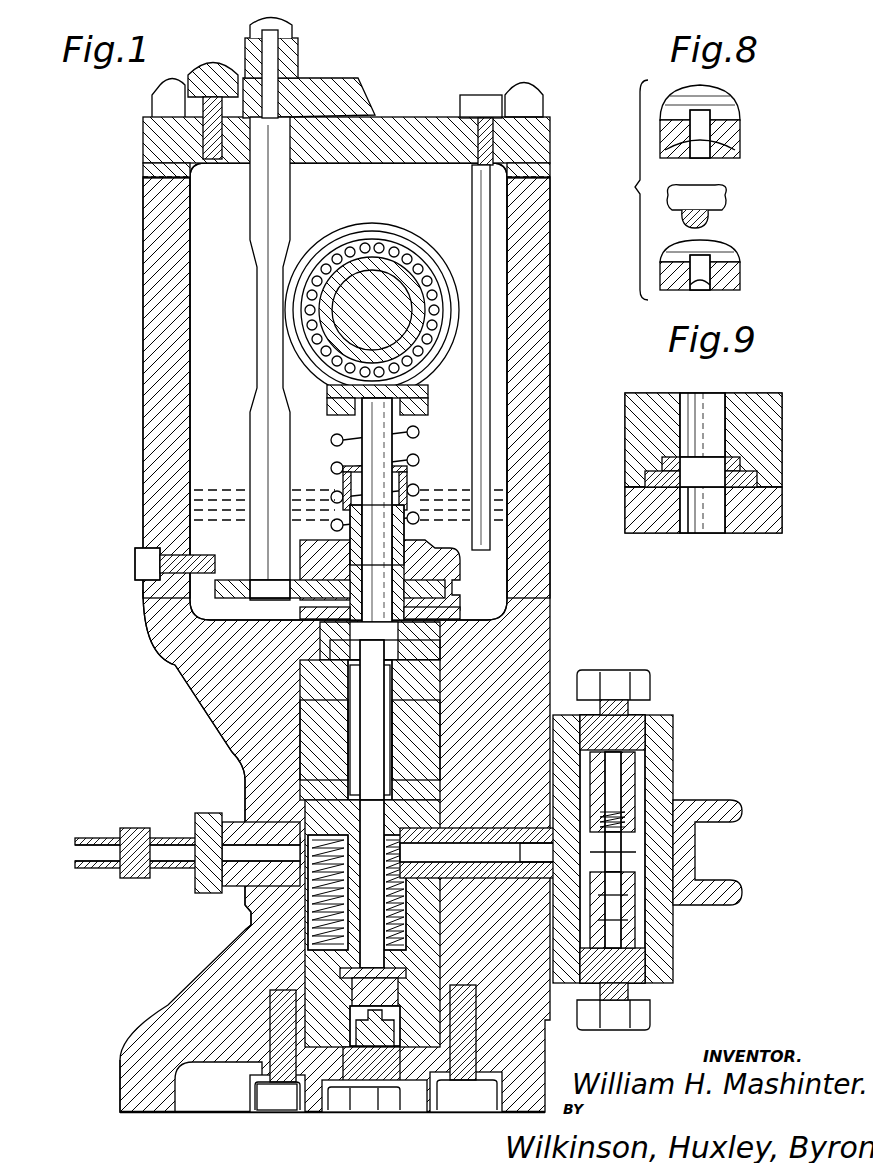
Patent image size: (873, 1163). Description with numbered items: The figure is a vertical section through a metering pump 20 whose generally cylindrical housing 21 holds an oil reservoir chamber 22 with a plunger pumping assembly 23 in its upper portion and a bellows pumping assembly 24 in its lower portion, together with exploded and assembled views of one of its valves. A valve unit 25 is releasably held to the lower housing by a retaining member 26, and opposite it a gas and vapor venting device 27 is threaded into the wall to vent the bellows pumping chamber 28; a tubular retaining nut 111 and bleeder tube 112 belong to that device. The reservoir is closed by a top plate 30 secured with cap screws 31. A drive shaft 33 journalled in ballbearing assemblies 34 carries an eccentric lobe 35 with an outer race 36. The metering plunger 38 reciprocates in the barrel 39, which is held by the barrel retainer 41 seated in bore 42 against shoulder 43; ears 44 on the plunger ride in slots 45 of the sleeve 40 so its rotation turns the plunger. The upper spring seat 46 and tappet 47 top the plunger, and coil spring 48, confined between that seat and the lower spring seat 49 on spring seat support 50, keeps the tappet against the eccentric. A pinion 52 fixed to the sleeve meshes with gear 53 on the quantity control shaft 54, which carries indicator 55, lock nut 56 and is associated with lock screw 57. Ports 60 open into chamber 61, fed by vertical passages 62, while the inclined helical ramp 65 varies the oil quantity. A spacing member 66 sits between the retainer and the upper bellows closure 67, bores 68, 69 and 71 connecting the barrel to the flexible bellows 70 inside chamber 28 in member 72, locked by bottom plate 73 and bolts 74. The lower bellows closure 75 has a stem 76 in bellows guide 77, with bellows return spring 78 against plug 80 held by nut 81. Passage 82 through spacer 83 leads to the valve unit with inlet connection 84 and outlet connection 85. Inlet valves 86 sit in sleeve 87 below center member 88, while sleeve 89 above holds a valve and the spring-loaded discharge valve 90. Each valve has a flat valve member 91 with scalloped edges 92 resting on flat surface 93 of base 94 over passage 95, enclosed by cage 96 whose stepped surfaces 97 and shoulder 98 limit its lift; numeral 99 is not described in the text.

In FIG. 1, the pump 20 is at (141, 244).
In FIG. 1, the housing 21 is at (143, 430).
In FIG. 1, the oil reservoir chamber 22 is at (190, 366).
In FIG. 1, the plunger pumping assembly 23 is at (515, 430).
In FIG. 1, the bellows pumping assembly 24 is at (245, 930).
In FIG. 1, the valve unit 25 is at (682, 730).
In FIG. 1, the retaining member 26 is at (742, 890).
In FIG. 1, the gas and vapor venting device 27 is at (192, 893).
In FIG. 1, the bellows pumping chamber 28 is at (400, 980).
In FIG. 1, the top plate 30 is at (405, 130).
In FIG. 1, the cap screws 31 is at (522, 78).
In FIG. 1, the drive shaft 33 is at (400, 318).
In FIG. 1, the ballbearing assemblies 34 is at (462, 330).
In FIG. 1, the eccentric lobe 35 is at (383, 246).
In FIG. 1, the outer race 36 is at (405, 250).
In FIG. 1, the metering plunger 38 is at (395, 505).
In FIG. 1, the barrel 39 is at (404, 525).
In FIG. 1, the sleeve 40 is at (348, 540).
In FIG. 1, the barrel retainer 41 is at (320, 700).
In FIG. 1, the bore 42 is at (440, 730).
In FIG. 1, the shoulder 43 is at (182, 668).
In FIG. 1, the ears 44 is at (420, 438).
In FIG. 1, the slots 45 is at (343, 472).
In FIG. 1, the upper spring seat 46 is at (330, 392).
In FIG. 1, the tappet 47 is at (428, 392).
In FIG. 1, the coil spring 48 is at (340, 528).
In FIG. 1, the lower spring seat 49 is at (425, 530).
In FIG. 1, the spring seat support 50 is at (458, 592).
In FIG. 1, the pinion 52 is at (484, 552).
In FIG. 1, the gear 53 is at (215, 592).
In FIG. 1, the quantity control shaft 54 is at (262, 217).
In FIG. 1, the indicator 55 is at (350, 95).
In FIG. 1, the lock nut 56 is at (230, 60).
In FIG. 1, the lock screw 57 is at (145, 555).
In FIG. 1, the ports 60 is at (312, 680).
In FIG. 1, the chamber 61 is at (440, 665).
In FIG. 1, the vertical passages 62 is at (440, 632).
In FIG. 1, the inclined helical ramp 65 is at (320, 618).
In FIG. 1, the spacing member 66 is at (380, 760).
In FIG. 1, the upper bellows closure 67 is at (400, 785).
In FIG. 1, the bore 68 is at (300, 720).
In FIG. 1, the bore 69 is at (370, 740).
In FIG. 1, the flexible bellows 70 is at (406, 895).
In FIG. 1, the bore 71 is at (357, 800).
In FIG. 1, the member 72 is at (262, 1062).
In FIG. 1, the bottom plate 73 is at (300, 1085).
In FIG. 1, the bolts 74 is at (275, 1095).
In FIG. 1, the lower bellows closure 75 is at (340, 973).
In FIG. 1, the upstanding stem 76 is at (384, 958).
In FIG. 1, the bellows guide 77 is at (335, 900).
In FIG. 1, the bellows return spring 78 is at (400, 1000).
In FIG. 1, the plug 80 is at (443, 1095).
In FIG. 1, the nut 81 is at (360, 1090).
In FIG. 1, the passage 82 is at (482, 845).
In FIG. 1, the spacer 83 is at (528, 862).
In FIG. 1, the threaded inlet connection 84 is at (610, 1003).
In FIG. 1, the threaded outlet connection 85 is at (618, 690).
In FIG. 1, the inlet valve 86 is at (640, 795).
In FIG. 9, the inlet valve 86 is at (784, 387).
In FIG. 1, the sleeve 87 is at (636, 885).
In FIG. 1, the center member 88 is at (622, 852).
In FIG. 1, the sleeve 89 is at (640, 810).
In FIG. 1, the spring-loaded discharge valve 90 is at (640, 775).
In FIG. 8, the flat valve member 91 is at (720, 190).
In FIG. 9, the flat valve member 91 is at (742, 470).
In FIG. 8, the scalloped edges 92 is at (715, 212).
In FIG. 8, the flat surface 93 is at (725, 245).
In FIG. 8, the base 94 is at (740, 268).
In FIG. 9, the base 94 is at (775, 508).
In FIG. 8, the passage 95 is at (705, 280).
In FIG. 9, the passage 95 is at (712, 530).
In FIG. 8, the cage 96 is at (722, 100).
In FIG. 9, the cage 96 is at (782, 414).
In FIG. 8, the stepped surfaces 97 is at (700, 140).
In FIG. 8, the shoulder 98 is at (640, 134).
In FIG. 8, the seat bore 99 is at (740, 118).
In FIG. 9, the seat bore 99 is at (710, 402).
In FIG. 1, the tubular retaining nut 111 is at (210, 815).
In FIG. 1, the bleeder tube 112 is at (162, 835).